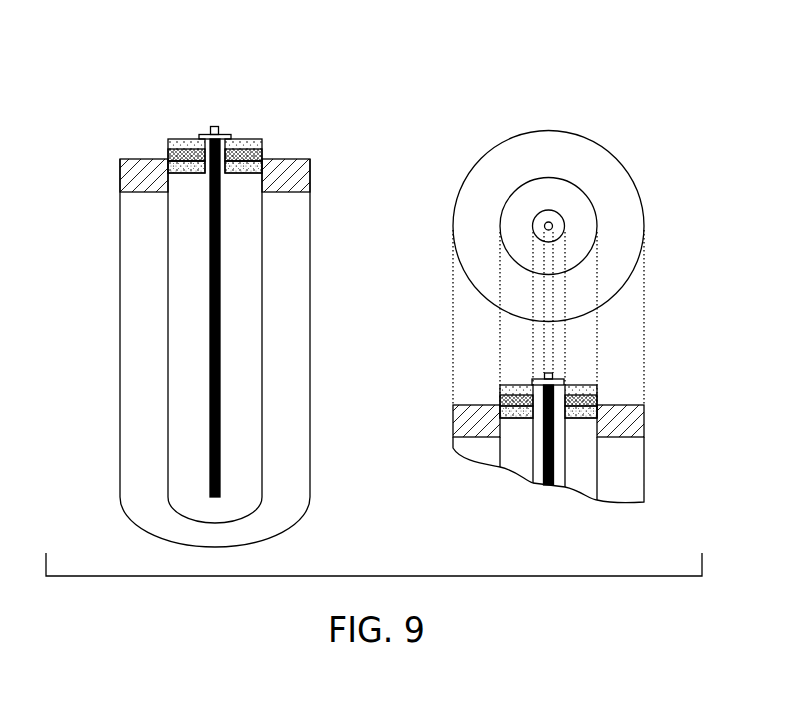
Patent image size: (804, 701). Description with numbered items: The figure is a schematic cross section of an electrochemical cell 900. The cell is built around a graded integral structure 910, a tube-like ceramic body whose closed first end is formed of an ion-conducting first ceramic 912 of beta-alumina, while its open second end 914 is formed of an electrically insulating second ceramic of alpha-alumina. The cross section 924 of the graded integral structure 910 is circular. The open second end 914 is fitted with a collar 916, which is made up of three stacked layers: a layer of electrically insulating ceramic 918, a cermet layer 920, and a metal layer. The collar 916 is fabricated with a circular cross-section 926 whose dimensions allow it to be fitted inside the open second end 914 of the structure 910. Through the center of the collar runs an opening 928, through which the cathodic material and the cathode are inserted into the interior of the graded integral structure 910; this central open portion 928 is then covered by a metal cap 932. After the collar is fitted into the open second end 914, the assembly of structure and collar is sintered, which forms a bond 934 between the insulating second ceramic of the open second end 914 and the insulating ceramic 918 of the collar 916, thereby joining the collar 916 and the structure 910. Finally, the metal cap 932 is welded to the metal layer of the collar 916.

The electrochemical cell 900 is at (642, 53).
The graded integral structure 910 is at (130, 307).
The ion-conducting first ceramic 912 is at (140, 392).
The electrically insulating second ceramic at the open second end 914 is at (120, 183).
The collar 916 is at (214, 73).
The electrically insulating ceramic layer 918 is at (235, 166).
The cermet layer 920 is at (168, 152).
The cross section of the graded integral structure 924 is at (167, 159).
The circular cross-section of the collar 926 is at (552, 226).
The opening 928 is at (225, 454).
The metal cap 932 is at (223, 131).
The bond 934 is at (603, 409).